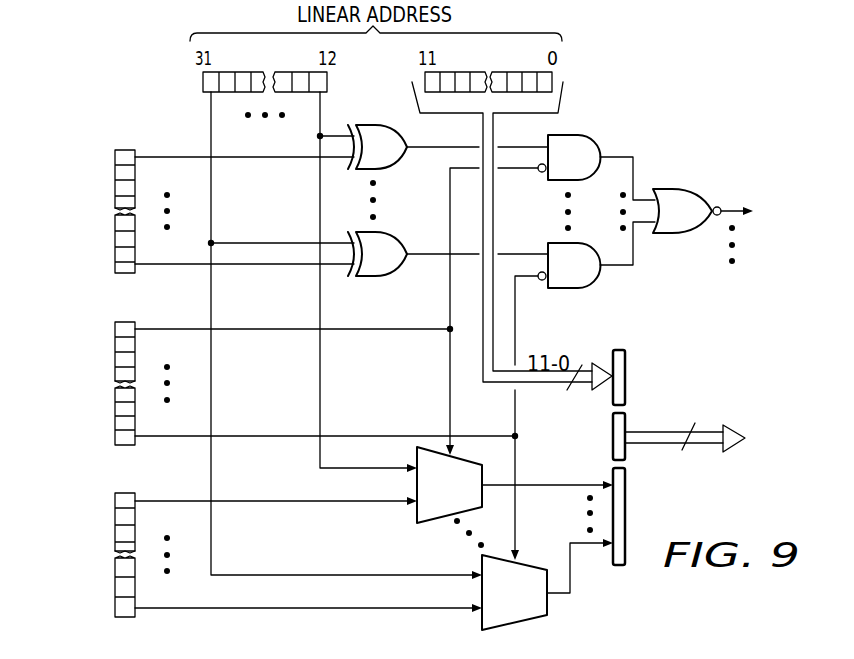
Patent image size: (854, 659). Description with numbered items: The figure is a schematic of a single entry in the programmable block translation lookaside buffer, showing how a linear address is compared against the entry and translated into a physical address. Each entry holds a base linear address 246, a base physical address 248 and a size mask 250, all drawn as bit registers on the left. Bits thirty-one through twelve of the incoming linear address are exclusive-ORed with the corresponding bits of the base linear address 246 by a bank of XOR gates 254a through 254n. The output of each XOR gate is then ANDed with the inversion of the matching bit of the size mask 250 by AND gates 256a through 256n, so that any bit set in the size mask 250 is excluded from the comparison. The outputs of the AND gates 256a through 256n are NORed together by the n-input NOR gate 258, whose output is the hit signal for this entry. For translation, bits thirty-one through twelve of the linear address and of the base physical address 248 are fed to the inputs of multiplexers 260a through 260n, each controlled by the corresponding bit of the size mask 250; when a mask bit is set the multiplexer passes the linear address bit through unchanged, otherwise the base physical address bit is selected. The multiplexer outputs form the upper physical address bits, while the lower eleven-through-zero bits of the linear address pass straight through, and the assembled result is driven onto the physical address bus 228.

The base linear address 246 is at (113, 248).
The size mask 250 is at (113, 418).
The base physical address 248 is at (113, 592).
The XOR gate 254a is at (372, 125).
The XOR gate 254n is at (408, 218).
The AND gate 256a is at (597, 142).
The AND gate 256n is at (603, 285).
The n-input NOR gate 258 is at (712, 187).
The multiplexer 260a is at (412, 512).
The multiplexer 260n is at (548, 601).
The address bus 228 is at (734, 450).